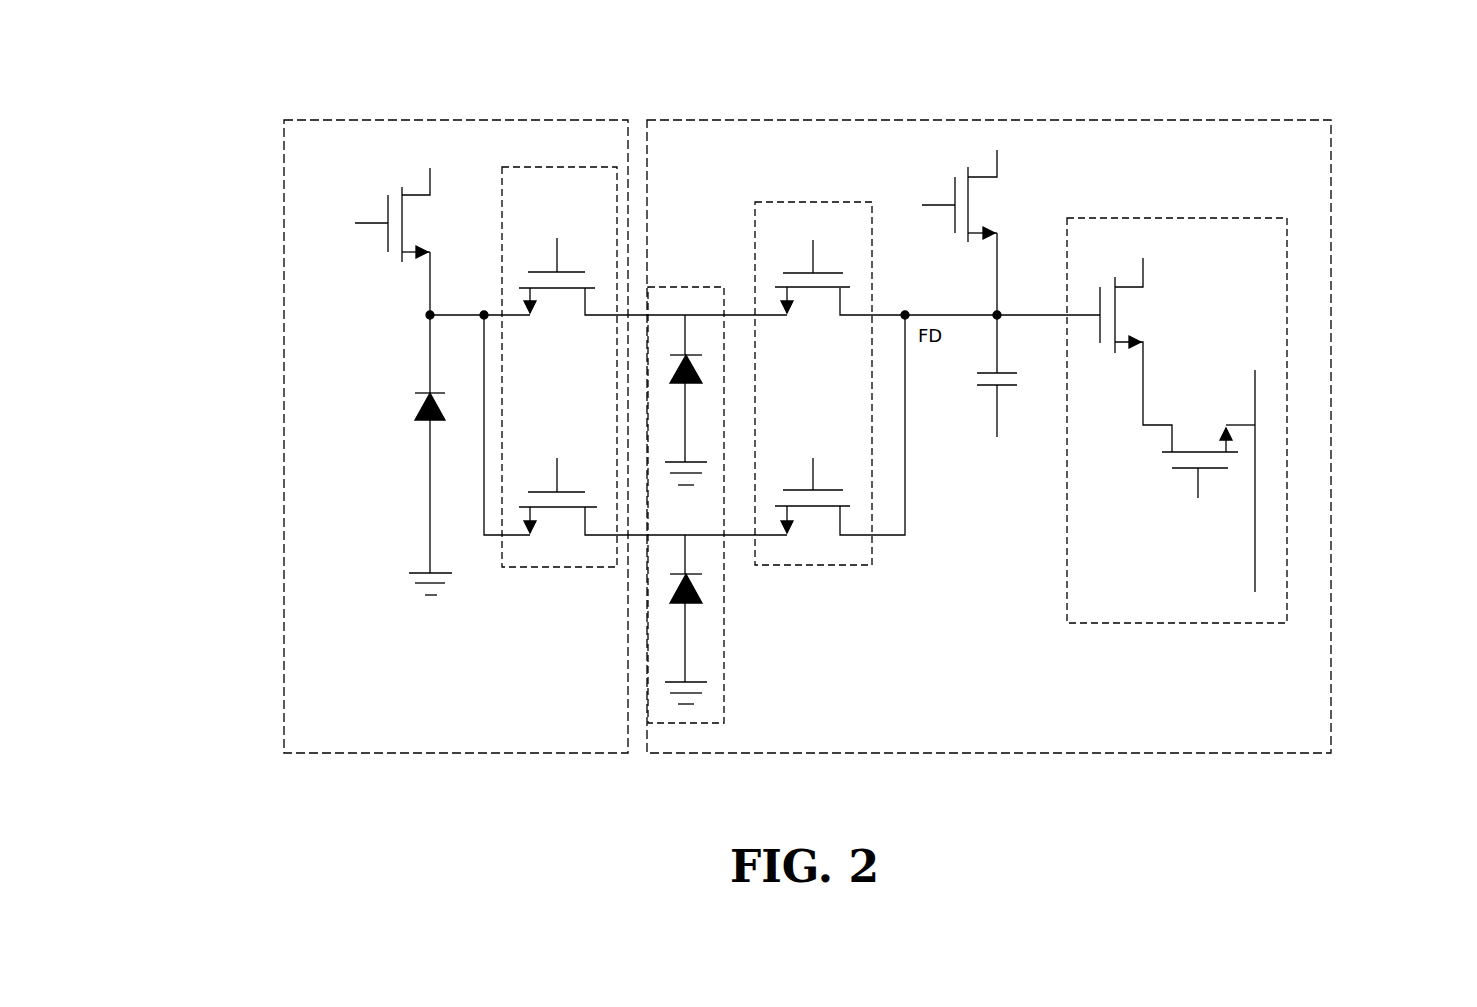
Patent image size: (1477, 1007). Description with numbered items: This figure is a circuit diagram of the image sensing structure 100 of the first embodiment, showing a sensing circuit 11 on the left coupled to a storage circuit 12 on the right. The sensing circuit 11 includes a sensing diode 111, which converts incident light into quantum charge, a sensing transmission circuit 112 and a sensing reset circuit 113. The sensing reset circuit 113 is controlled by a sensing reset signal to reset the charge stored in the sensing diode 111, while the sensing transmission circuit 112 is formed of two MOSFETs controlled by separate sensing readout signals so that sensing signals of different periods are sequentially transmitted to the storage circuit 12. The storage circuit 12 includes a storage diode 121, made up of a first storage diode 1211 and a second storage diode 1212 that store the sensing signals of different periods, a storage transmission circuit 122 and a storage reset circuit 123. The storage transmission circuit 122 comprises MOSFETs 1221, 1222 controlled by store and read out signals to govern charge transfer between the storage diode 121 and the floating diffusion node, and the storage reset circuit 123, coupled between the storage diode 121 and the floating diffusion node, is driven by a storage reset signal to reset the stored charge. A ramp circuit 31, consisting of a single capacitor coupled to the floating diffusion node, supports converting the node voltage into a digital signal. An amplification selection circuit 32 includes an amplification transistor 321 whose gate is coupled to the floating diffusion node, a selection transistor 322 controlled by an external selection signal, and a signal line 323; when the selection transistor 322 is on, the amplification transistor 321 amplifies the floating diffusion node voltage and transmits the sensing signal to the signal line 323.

The image sensing structure 100 is at (195, 95).
The sensing circuit 11 is at (284, 437).
The sensing diode 111 is at (423, 395).
The sensing transmission circuit 112 is at (558, 167).
The sensing reset circuit 113 is at (372, 241).
The storage circuit 12 is at (1331, 437).
The storage diode 121 is at (724, 682).
The first storage diode 1211 is at (675, 337).
The second storage diode 1212 is at (711, 574).
The storage transmission circuit 122 is at (812, 202).
The MOSFET 1221 is at (850, 287).
The MOSFET 1222 is at (825, 462).
The storage reset circuit 123 is at (972, 205).
The ramp circuit 31 is at (978, 385).
The amplification selection circuit 32 is at (1287, 333).
The amplification transistor 321 is at (1121, 259).
The selection transistor 322 is at (1185, 468).
The signal line 323 is at (1255, 527).